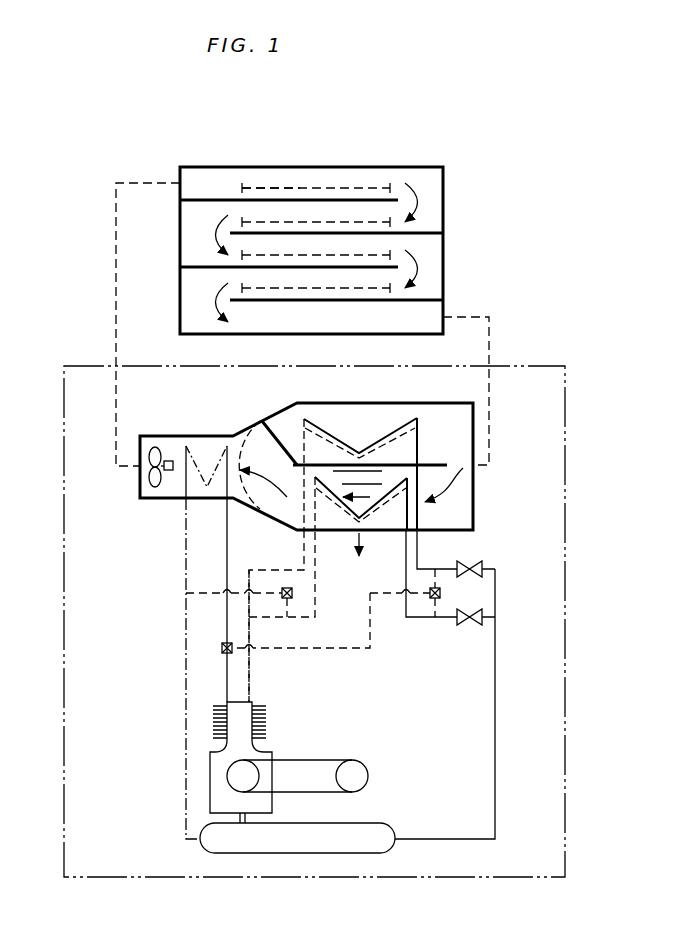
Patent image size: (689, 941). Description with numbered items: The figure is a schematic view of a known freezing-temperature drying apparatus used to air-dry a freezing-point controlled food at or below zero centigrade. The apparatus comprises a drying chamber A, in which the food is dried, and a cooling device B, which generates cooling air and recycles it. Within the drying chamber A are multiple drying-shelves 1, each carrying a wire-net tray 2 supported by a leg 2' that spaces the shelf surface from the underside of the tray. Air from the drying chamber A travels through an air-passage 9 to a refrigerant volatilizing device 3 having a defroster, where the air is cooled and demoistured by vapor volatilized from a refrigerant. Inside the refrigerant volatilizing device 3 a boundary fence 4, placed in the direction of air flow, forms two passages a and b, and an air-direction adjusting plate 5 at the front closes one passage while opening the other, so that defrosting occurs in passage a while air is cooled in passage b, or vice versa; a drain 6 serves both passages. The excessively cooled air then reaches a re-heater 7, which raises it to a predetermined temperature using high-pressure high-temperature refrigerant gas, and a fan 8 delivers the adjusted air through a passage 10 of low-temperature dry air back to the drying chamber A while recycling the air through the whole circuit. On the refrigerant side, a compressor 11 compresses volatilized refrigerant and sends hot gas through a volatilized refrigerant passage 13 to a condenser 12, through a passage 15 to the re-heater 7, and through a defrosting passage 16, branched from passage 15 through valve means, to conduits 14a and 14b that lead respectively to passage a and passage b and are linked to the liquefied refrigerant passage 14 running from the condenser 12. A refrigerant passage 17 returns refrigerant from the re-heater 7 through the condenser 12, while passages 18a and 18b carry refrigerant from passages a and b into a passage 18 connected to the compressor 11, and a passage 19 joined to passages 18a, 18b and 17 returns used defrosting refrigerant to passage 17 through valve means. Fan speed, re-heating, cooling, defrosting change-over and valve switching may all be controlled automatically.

The drying chamber A is at (296, 165).
The cooling device B is at (570, 467).
The drying-shelves 1 is at (412, 233).
The wire-net tray 2 is at (316, 216).
The leg 2' is at (249, 166).
The refrigerant volatilizing device 3 is at (363, 402).
The passage a is at (382, 413).
The passage b is at (391, 522).
The boundary fence 4 is at (318, 465).
The air-direction adjusting plate 5 is at (282, 433).
The drain 6 is at (358, 540).
The re-heater 7 is at (203, 443).
The fan 8 is at (157, 443).
The air-passage 9 is at (489, 335).
The passage of low-temperature dry-air 10 is at (116, 273).
The compressor 11 is at (273, 745).
The condenser 12 is at (272, 855).
The volatilized refrigerant passage 13 is at (238, 825).
The liquified refrigerant passage 14 is at (495, 655).
The conduit 14a is at (448, 560).
The conduit 14b is at (455, 620).
The passage of volatilized refrigerant for heat 15 is at (227, 685).
The passage of volatilized refrigerant for defrosting 16 is at (372, 630).
The refrigerant passage 17 is at (186, 563).
The passage of refrigerant 18 is at (250, 680).
The passage 18a is at (300, 568).
The passage 18b is at (303, 618).
The passage 19 is at (208, 595).